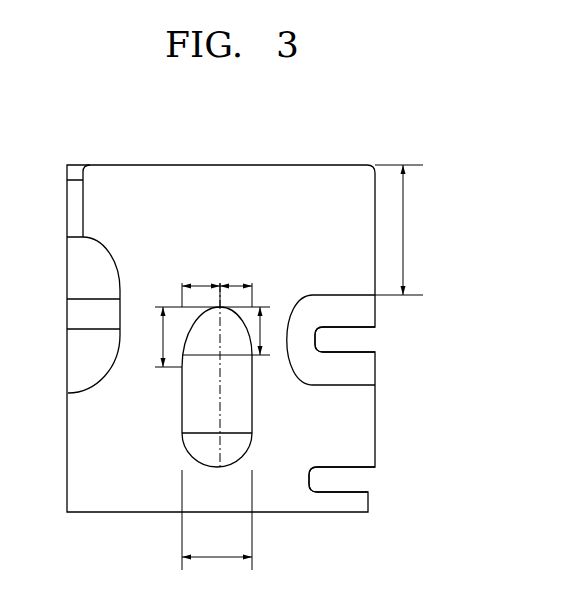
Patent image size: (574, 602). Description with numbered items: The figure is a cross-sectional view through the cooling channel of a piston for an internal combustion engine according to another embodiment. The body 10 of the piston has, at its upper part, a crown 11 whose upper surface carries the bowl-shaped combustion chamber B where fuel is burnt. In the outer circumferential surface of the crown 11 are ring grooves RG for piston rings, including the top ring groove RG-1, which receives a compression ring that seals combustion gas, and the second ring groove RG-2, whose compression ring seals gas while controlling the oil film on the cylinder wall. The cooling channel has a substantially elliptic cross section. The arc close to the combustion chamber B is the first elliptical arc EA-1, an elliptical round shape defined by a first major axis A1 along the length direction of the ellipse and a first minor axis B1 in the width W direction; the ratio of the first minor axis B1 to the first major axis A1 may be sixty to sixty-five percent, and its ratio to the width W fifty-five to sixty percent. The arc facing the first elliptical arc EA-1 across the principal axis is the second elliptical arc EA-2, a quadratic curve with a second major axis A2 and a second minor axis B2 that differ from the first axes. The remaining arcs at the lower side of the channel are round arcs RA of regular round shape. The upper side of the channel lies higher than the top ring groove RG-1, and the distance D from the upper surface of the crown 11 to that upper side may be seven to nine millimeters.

The body 10 is at (372, 119).
The crown 11 is at (347, 198).
The combustion chamber B is at (100, 378).
The first elliptical arc EA-1 is at (192, 322).
The second elliptical arc EA-2 is at (244, 316).
The round arcs RA is at (247, 457).
The ring grooves RG is at (480, 346).
The top ring groove RG-1 is at (340, 352).
The second ring groove RG-2 is at (340, 492).
The first major axis A1 is at (205, 337).
The second major axis A2 is at (232, 331).
The first minor axis B1 is at (201, 286).
The second minor axis B2 is at (236, 286).
The distance D is at (399, 230).
The width W is at (217, 527).